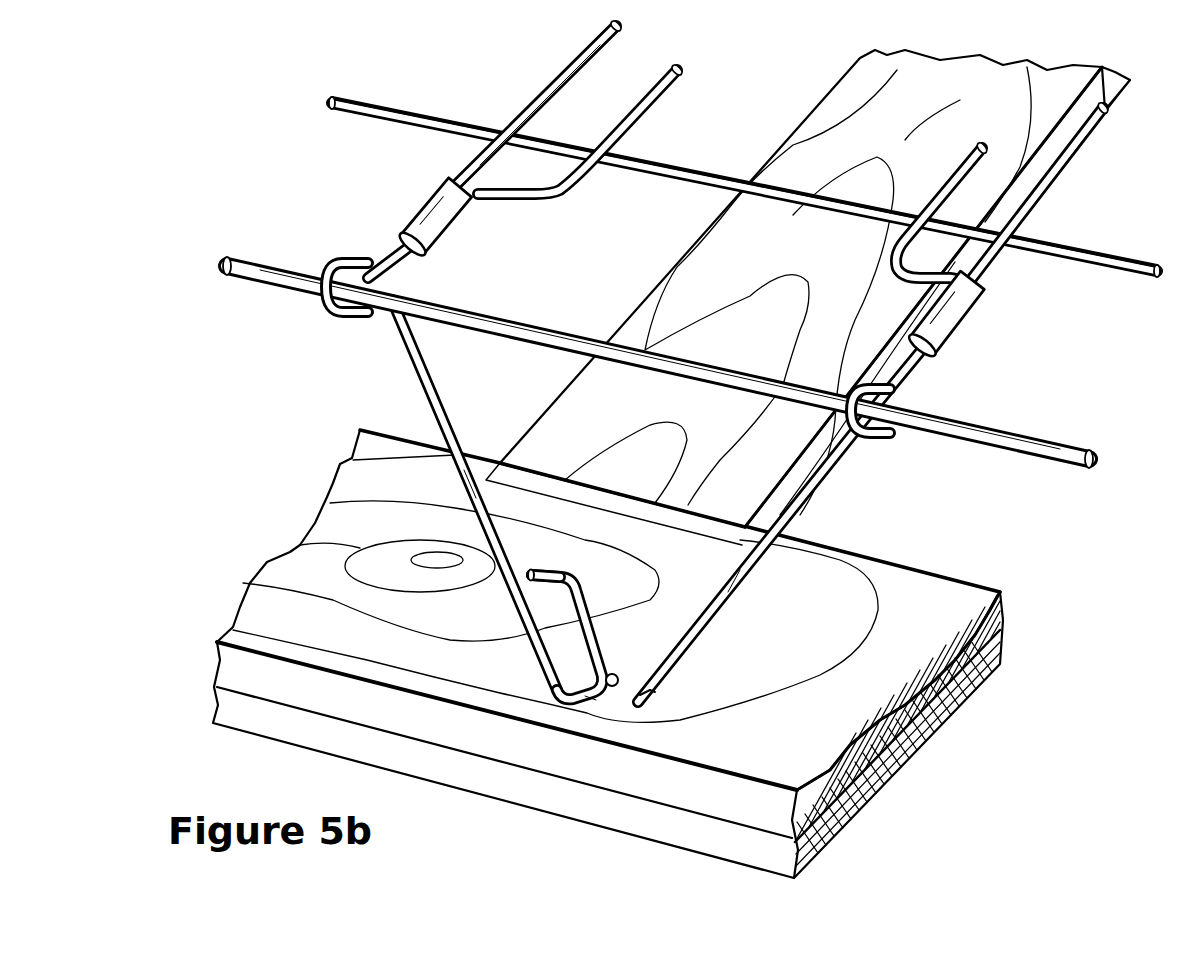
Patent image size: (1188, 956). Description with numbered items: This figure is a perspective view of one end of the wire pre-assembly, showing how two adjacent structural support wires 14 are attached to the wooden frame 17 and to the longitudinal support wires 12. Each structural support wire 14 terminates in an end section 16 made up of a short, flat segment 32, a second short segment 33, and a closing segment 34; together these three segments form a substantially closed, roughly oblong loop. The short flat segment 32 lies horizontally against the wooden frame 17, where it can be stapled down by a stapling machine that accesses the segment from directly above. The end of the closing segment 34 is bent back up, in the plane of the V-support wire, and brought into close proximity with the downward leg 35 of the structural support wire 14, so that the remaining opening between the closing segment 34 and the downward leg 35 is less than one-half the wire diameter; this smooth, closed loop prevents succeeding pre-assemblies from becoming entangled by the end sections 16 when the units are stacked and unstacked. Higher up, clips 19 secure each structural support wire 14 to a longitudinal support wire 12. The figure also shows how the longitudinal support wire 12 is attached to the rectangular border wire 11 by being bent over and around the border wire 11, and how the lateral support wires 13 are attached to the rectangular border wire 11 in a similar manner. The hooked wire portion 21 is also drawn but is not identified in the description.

The rectangular border wire 11 is at (1052, 448).
The longitudinal support wire 12 is at (565, 84).
The lateral support wire 13 is at (692, 168).
The structural support wire 14 is at (692, 68).
The end section 16 is at (594, 690).
The wooden frame 17 is at (990, 688).
The clip 19 is at (425, 205).
The hook rods 21 is at (642, 106).
The short flat segment 32 is at (614, 676).
The second short segment 33 is at (597, 600).
The closing segment 34 is at (560, 566).
The downward leg 35 is at (472, 493).